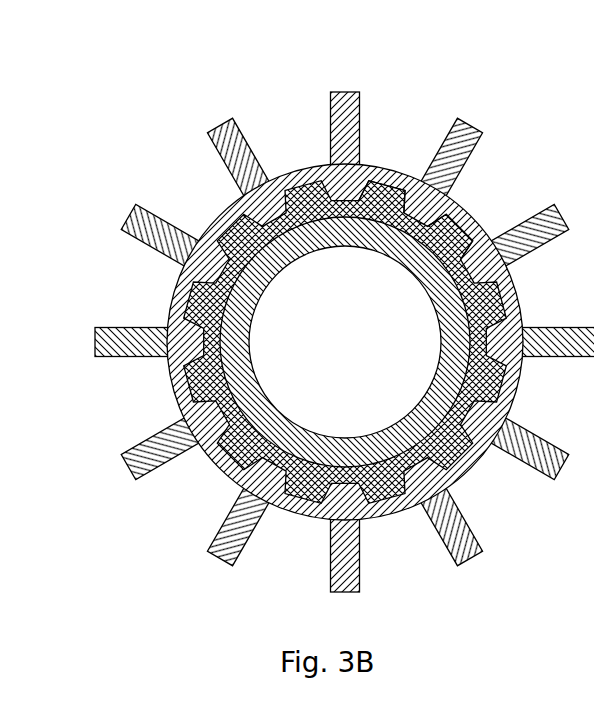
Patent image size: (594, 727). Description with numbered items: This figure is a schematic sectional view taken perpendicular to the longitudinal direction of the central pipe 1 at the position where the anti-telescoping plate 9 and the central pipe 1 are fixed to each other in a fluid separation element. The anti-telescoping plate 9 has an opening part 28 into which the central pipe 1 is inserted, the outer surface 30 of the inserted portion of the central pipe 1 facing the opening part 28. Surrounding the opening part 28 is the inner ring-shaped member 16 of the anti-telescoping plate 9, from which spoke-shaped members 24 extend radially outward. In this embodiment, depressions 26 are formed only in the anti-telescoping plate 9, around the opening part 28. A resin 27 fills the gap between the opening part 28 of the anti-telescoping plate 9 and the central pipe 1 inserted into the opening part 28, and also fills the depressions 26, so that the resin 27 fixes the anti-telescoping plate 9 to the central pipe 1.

The anti-telescoping plate 9 is at (341, 314).
The central pipe 1 is at (443, 297).
The inner ring-shaped member 16 is at (222, 468).
The spoke-shaped member 24 is at (246, 169).
The depression 26 is at (382, 193).
The resin 27 is at (487, 313).
The opening part 28 is at (267, 338).
The outer surface of a portion inserted into opening part 30 is at (465, 230).